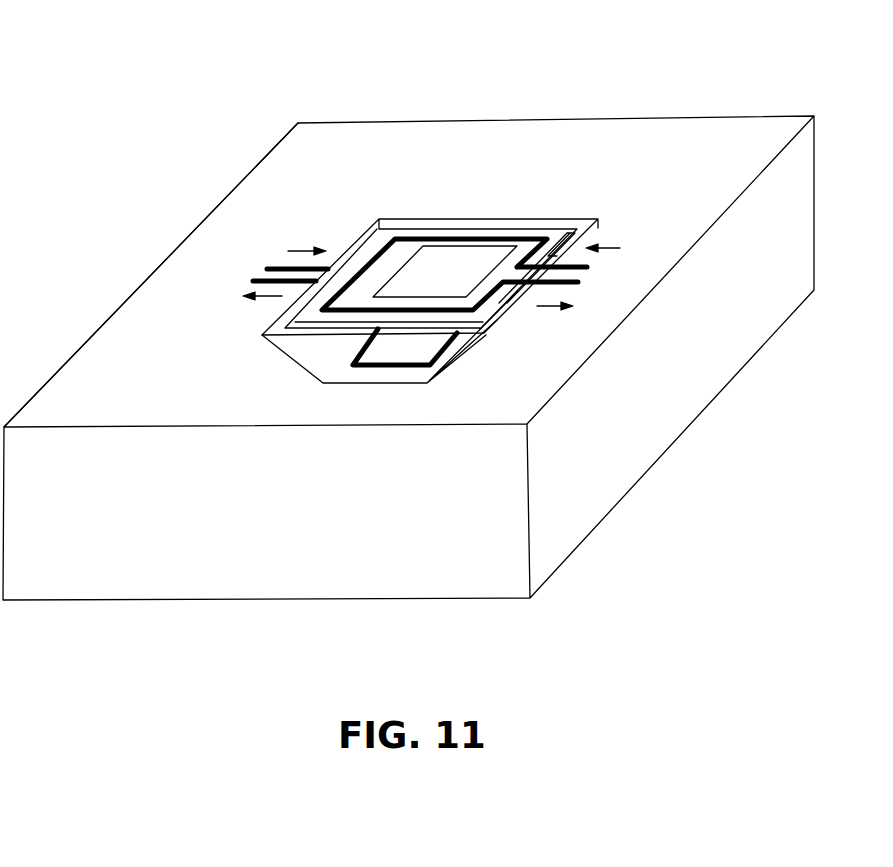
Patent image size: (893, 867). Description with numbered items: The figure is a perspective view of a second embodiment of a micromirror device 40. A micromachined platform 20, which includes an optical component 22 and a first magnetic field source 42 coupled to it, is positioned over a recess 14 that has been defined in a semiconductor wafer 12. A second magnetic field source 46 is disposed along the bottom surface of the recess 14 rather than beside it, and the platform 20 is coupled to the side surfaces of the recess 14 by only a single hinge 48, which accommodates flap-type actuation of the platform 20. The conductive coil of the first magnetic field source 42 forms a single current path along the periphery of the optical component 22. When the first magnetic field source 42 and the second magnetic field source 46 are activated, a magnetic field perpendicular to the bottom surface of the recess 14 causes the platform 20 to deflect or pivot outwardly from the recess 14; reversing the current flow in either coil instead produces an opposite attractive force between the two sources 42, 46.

The semiconductor wafer 12 is at (730, 162).
The recess 14 is at (336, 362).
The micromachined platform 20 is at (500, 318).
The optical component 22 is at (443, 258).
The micromirror device 40 is at (132, 138).
The first magnetic field source 42 is at (501, 236).
The second magnetic field source 46 is at (380, 330).
The single hinge 48 is at (557, 234).